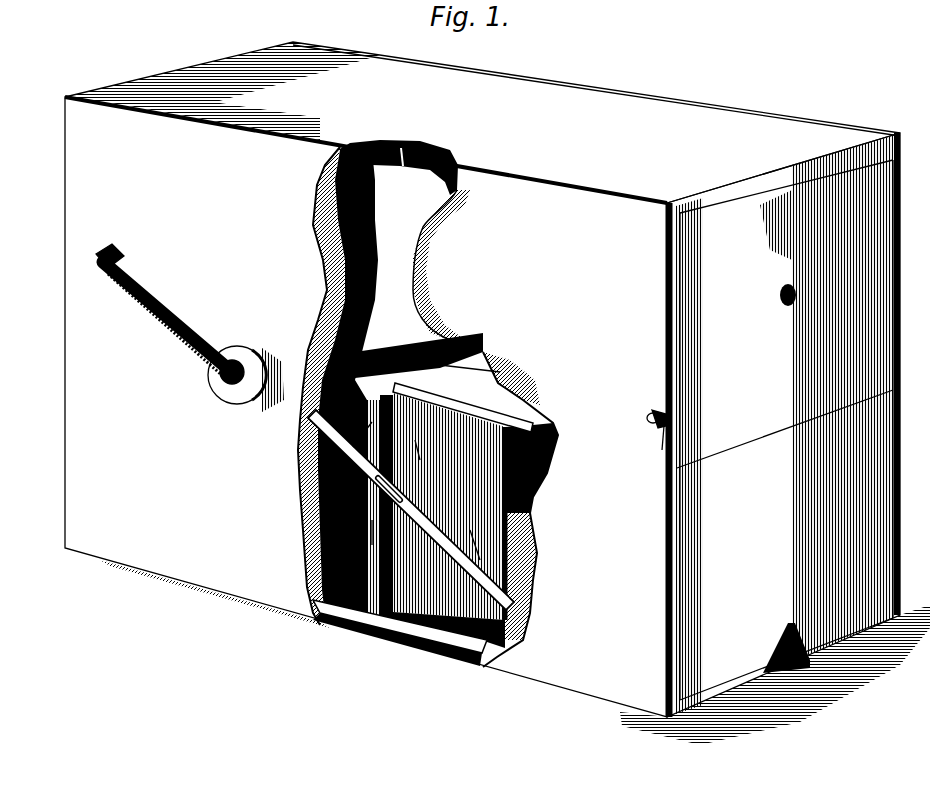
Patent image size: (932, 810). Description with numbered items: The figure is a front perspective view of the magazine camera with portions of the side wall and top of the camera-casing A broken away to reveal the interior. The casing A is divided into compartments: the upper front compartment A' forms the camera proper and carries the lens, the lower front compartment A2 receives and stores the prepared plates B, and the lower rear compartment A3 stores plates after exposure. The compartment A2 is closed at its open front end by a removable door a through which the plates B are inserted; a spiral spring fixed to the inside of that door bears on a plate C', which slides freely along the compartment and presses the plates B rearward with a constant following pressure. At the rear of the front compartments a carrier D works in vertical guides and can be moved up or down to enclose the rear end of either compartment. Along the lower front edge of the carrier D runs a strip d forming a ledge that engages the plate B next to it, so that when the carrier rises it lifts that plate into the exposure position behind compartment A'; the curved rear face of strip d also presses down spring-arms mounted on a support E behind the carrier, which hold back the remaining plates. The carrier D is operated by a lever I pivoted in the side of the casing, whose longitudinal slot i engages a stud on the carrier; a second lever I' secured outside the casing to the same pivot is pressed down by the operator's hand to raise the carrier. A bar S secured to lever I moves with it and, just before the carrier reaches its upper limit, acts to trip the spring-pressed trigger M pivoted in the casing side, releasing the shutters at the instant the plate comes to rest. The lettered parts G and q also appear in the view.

The camera-casing A is at (497, 393).
The upper front compartment A' is at (481, 354).
The lower front compartment A2 is at (548, 587).
The lower rear compartment A3 is at (312, 572).
The prepared plate B is at (422, 520).
The plate C' is at (468, 459).
The carrier D is at (413, 450).
The support E is at (366, 525).
The partition G is at (419, 330).
The lever I is at (411, 510).
The second lever I' is at (164, 311).
The spring-pressed trigger M is at (650, 414).
The bar S is at (468, 545).
The removable door a is at (785, 463).
The strip d is at (398, 628).
The longitudinal slot i is at (375, 483).
The knob q is at (223, 386).